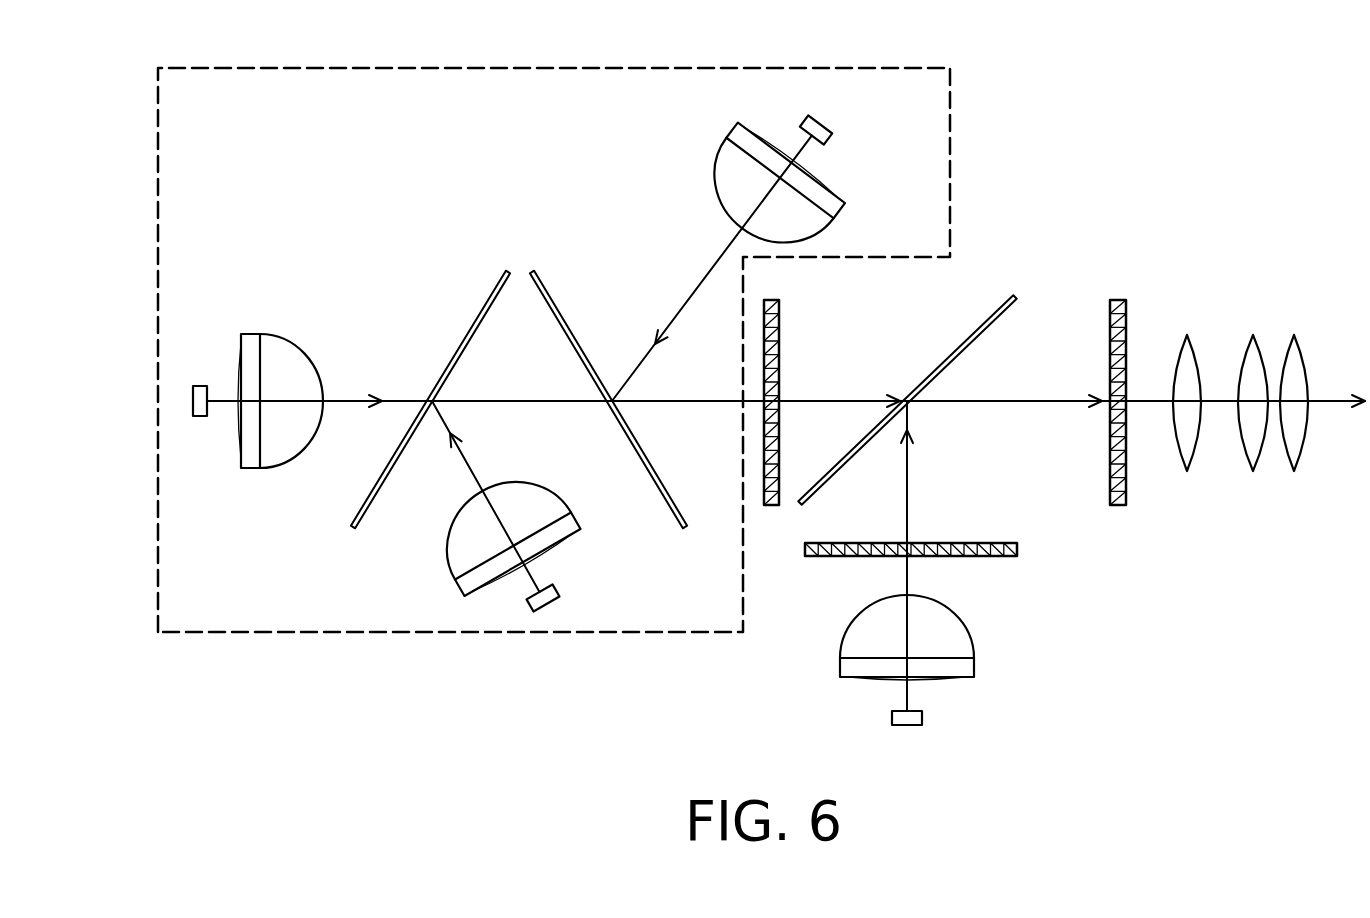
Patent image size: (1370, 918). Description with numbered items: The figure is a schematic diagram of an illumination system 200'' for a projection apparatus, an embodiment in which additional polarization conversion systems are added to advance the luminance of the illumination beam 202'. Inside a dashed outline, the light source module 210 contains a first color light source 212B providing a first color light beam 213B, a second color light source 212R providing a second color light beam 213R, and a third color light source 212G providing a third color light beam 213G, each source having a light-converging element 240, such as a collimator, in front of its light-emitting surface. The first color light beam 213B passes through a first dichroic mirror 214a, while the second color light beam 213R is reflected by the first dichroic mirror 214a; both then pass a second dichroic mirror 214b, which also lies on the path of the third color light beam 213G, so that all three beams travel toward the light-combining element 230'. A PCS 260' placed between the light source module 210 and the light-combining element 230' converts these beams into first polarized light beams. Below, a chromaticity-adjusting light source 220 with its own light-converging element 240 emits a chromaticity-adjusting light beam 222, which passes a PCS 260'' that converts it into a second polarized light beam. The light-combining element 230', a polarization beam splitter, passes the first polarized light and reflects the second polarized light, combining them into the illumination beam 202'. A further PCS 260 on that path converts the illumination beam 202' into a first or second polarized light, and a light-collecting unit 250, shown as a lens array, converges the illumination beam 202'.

The illumination system 200'' is at (1280, 700).
The light source module 210 is at (950, 146).
The first color light source 212B is at (200, 417).
The third color light source 212G is at (826, 124).
The second color light source 212R is at (560, 590).
The first color light beam 213B is at (373, 398).
The third color light beam 213G is at (717, 262).
The second color light beam 213R is at (466, 458).
The first dichroic mirror 214a is at (488, 305).
The second dichroic mirror 214b is at (550, 300).
The chromaticity-adjusting light source 220 is at (928, 718).
The chromaticity-adjusting light beam 222 is at (912, 490).
The light-combining element 230' is at (907, 400).
The light-converging element 240 is at (292, 332).
The light-collecting unit 250 is at (1230, 315).
The polarization conversion system 260 is at (1111, 359).
The polarization conversion system 260' is at (803, 393).
The polarization conversion system 260'' is at (979, 556).
The illumination beam 202' is at (1136, 356).